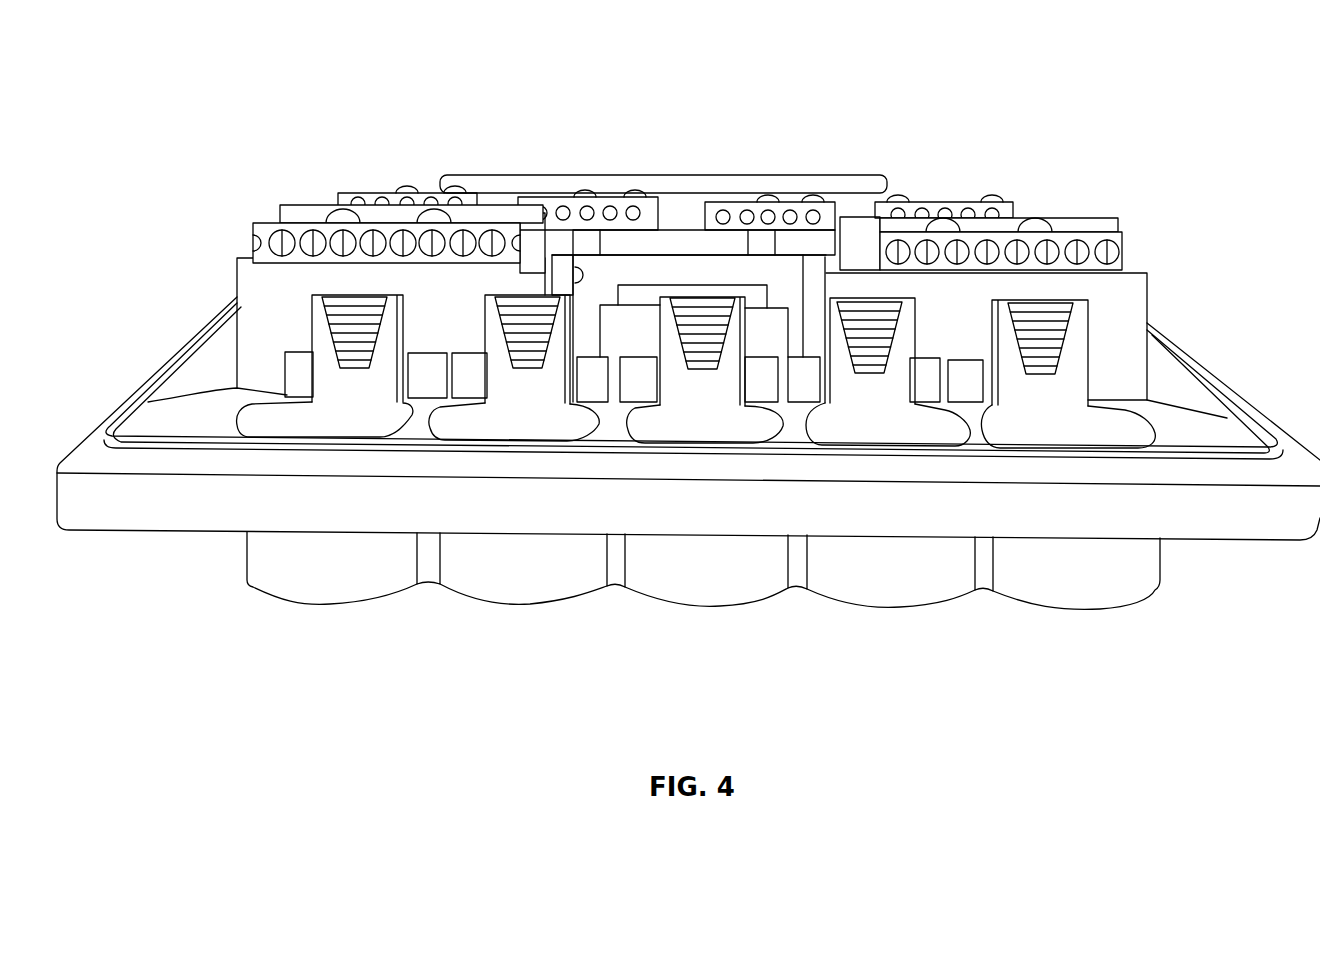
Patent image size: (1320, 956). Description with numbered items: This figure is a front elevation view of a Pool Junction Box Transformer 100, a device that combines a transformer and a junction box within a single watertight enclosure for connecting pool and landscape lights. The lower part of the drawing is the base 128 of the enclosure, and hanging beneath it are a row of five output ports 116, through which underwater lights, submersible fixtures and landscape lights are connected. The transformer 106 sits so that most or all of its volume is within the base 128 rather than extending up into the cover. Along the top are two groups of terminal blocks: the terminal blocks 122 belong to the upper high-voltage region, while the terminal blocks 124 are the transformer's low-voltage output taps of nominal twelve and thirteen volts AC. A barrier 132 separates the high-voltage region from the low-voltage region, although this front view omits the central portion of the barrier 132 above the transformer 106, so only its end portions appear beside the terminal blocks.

The Pool Junction Box Transformer 100 is at (1105, 125).
The transformer 106 is at (667, 283).
The output ports 116 is at (317, 585).
The terminal blocks 122 is at (373, 198).
The terminal blocks 124 is at (377, 243).
The base 128 is at (218, 397).
The barrier 132 is at (528, 220).